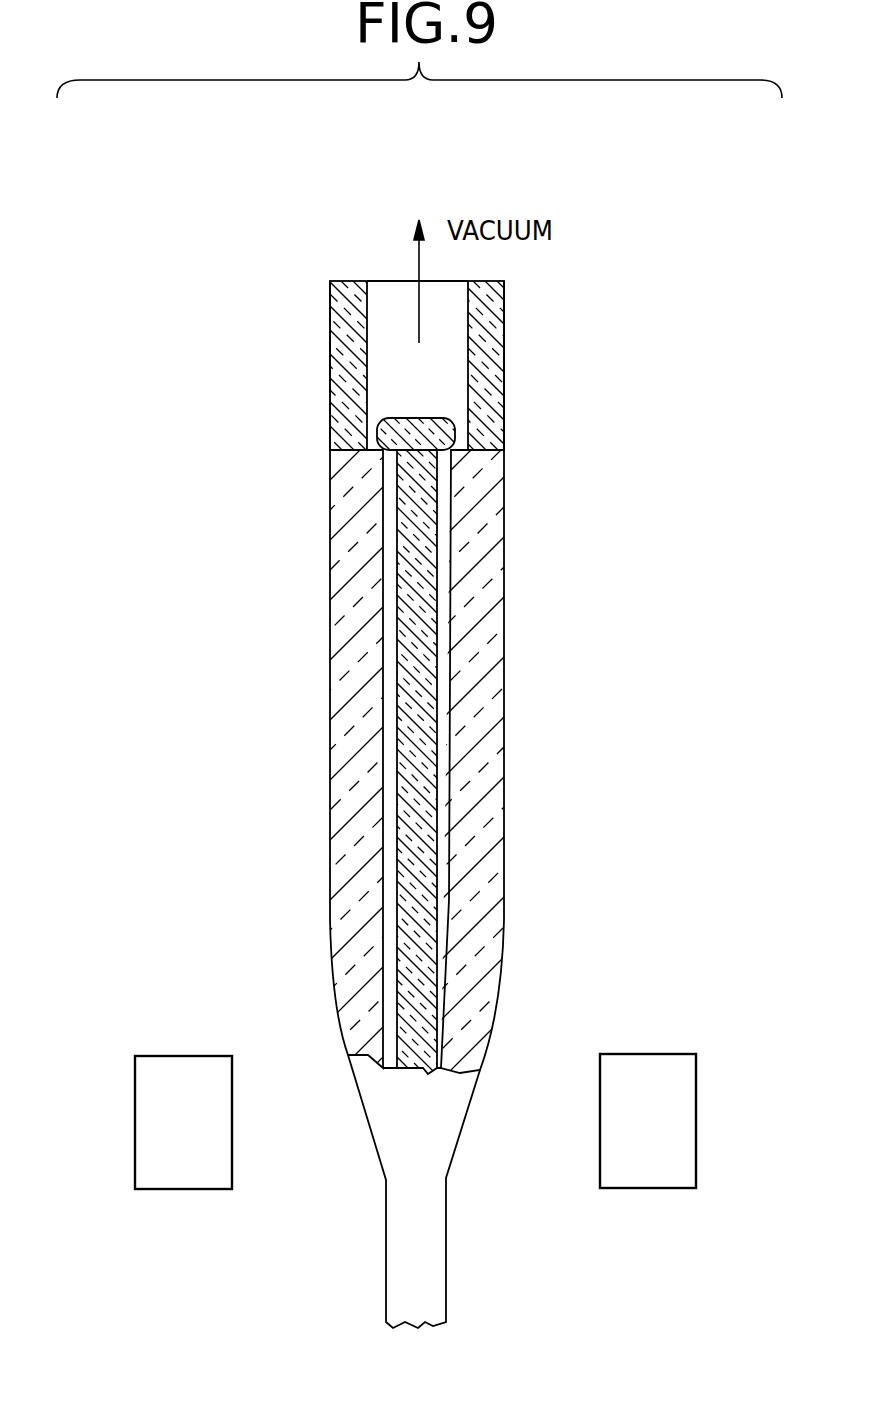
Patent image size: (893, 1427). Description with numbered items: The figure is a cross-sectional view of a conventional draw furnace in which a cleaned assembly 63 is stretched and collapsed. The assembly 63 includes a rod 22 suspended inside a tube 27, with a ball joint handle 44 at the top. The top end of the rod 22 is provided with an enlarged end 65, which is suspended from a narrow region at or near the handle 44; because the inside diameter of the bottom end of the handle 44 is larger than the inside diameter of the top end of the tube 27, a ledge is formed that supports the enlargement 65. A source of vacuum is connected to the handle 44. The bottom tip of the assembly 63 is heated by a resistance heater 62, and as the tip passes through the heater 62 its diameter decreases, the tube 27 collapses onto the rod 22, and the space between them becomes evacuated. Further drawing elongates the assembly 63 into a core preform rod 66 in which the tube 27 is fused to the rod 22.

The rod 22 is at (425, 612).
The tube 27 is at (475, 735).
The ball joint handle 44 is at (490, 321).
The resistance heater 62 is at (180, 1055).
The cleaned assembly 63 is at (320, 575).
The enlarged end 65 is at (442, 435).
The core preform rod 66 is at (446, 1250).